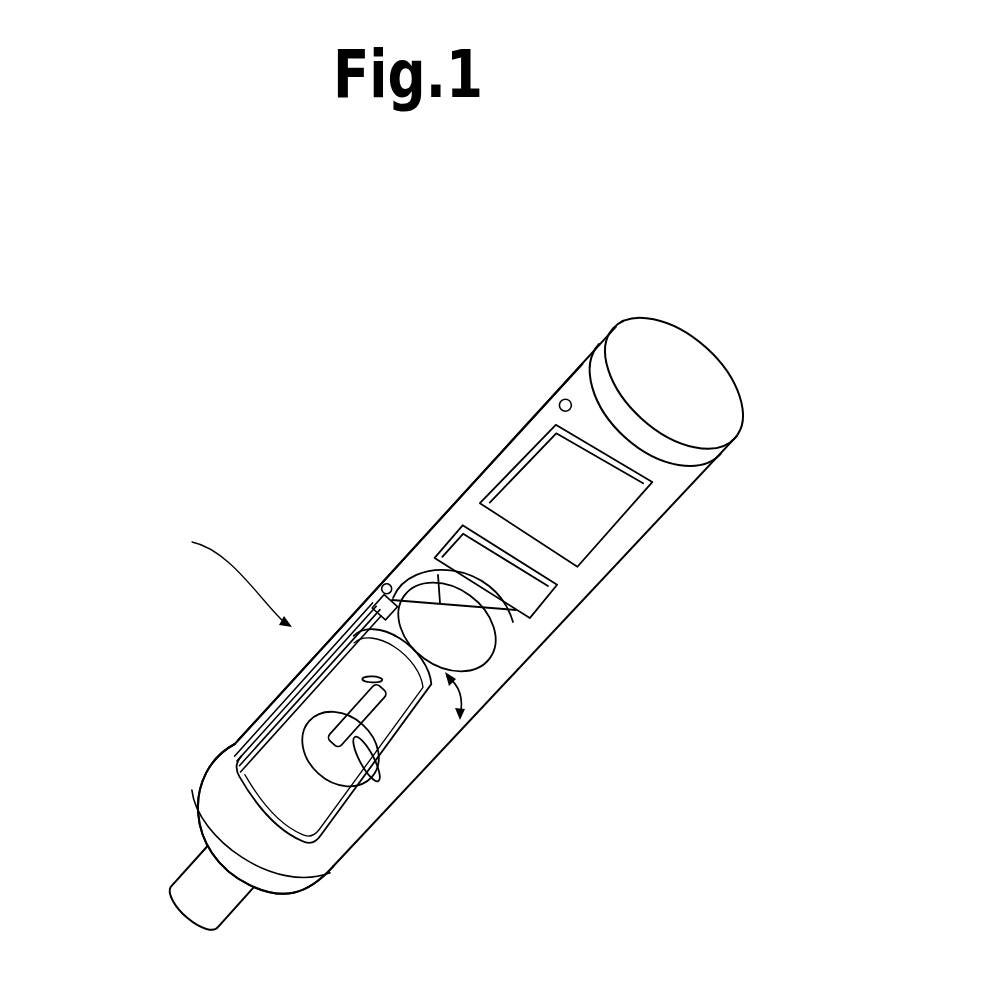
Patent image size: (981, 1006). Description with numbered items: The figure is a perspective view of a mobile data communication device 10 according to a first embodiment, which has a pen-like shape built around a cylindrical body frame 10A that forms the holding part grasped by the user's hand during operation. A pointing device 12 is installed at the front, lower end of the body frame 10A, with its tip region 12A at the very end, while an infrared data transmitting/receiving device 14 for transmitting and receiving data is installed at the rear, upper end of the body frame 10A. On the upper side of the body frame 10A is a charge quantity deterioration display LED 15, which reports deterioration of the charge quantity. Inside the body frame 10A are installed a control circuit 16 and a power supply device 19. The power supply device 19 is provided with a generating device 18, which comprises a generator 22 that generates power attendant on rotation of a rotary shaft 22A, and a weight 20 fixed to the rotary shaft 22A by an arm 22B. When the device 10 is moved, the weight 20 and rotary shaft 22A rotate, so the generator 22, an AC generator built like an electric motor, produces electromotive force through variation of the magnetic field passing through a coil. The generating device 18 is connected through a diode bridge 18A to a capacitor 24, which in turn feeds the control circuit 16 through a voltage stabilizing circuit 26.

The mobile data communication device 10 is at (628, 619).
The cylindrical body frame 10A is at (413, 548).
The pointing device 12 is at (300, 883).
The probe tip 12A is at (215, 897).
The infrared data transmitting/receiving device 14 is at (663, 343).
The charge quantity deterioration display LED 15 is at (557, 406).
The control circuit 16 is at (577, 523).
The generating device 18 is at (436, 736).
The diode bridge 18A is at (378, 586).
The power supply device 19 is at (219, 568).
The weight 20 is at (340, 690).
The generator 22 is at (263, 792).
The rotary shaft 22A is at (374, 784).
The arm 22B is at (348, 647).
The capacitor 24 is at (470, 643).
The voltage stabilizing circuit 26 is at (465, 553).